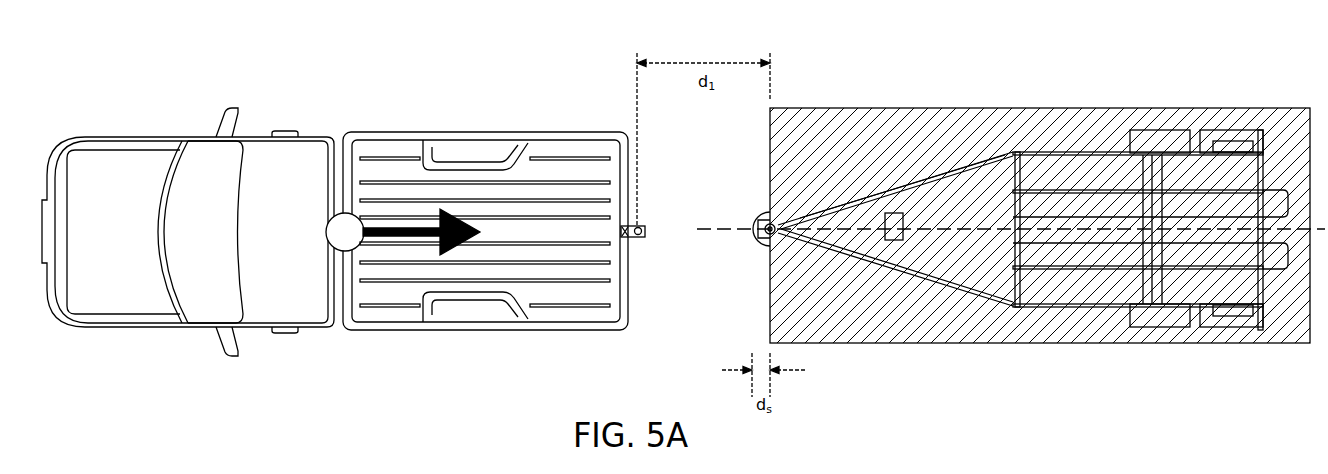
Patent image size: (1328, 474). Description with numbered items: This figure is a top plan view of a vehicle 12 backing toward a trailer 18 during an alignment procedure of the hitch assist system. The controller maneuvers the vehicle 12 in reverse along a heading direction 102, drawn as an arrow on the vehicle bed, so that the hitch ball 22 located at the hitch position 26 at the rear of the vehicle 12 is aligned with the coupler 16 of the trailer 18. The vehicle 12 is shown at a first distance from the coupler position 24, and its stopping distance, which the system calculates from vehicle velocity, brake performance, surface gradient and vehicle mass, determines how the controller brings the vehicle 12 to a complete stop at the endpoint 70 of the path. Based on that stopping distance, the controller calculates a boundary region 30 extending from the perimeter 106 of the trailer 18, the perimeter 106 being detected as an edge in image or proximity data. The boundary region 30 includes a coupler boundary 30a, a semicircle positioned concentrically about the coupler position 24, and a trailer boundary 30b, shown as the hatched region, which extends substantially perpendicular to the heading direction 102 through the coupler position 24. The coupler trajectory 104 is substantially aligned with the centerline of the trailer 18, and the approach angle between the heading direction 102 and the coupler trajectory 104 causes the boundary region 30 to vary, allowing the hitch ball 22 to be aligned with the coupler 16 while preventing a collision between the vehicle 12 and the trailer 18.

The vehicle 12 is at (265, 153).
The heading direction 102 is at (408, 228).
The hitch ball 22 is at (619, 296).
The hitch position 26 is at (644, 238).
The endpoint 70 is at (762, 215).
The boundary region 30 is at (715, 252).
The coupler boundary 30a is at (757, 253).
The trailer boundary 30b is at (1038, 108).
The coupler 16 is at (852, 307).
The coupler position 24 is at (773, 233).
The coupler trajectory 104 is at (860, 230).
The perimeter 106 is at (951, 158).
The trailer 18 is at (1053, 307).